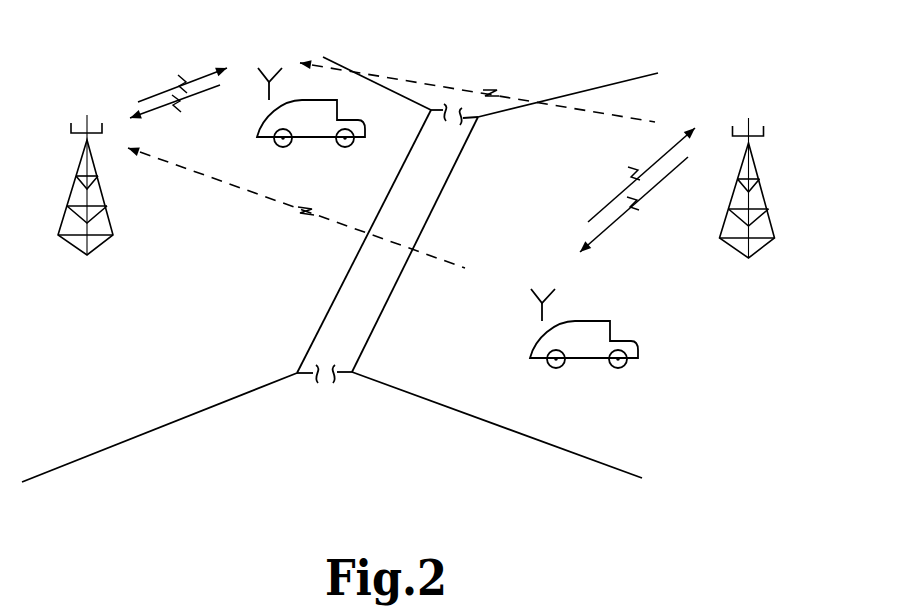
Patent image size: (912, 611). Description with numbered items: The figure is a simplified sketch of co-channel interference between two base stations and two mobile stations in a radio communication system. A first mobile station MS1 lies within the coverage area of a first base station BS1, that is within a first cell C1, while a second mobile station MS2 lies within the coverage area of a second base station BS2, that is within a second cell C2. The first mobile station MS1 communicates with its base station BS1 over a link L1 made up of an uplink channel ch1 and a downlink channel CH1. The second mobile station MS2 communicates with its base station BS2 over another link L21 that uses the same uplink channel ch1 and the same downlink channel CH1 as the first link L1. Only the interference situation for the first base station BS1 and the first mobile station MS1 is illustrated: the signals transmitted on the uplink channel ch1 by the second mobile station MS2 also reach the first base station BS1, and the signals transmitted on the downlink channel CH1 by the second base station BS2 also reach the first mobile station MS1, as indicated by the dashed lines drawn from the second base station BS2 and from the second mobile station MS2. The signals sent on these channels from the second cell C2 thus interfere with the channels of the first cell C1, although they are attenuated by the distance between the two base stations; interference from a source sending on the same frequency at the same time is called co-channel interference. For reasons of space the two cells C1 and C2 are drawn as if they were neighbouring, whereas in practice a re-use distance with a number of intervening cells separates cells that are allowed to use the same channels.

The first base station BS1 is at (87, 255).
The second base station BS2 is at (748, 258).
The first mobile station MS1 is at (323, 100).
The second mobile station MS2 is at (575, 360).
The link L1 is at (182, 80).
The another link L21 is at (632, 174).
The first cell C1 is at (167, 373).
The second cell C2 is at (453, 375).
The downlink channel CH1 is at (433, 149).
The uplink channel ch1 is at (426, 184).